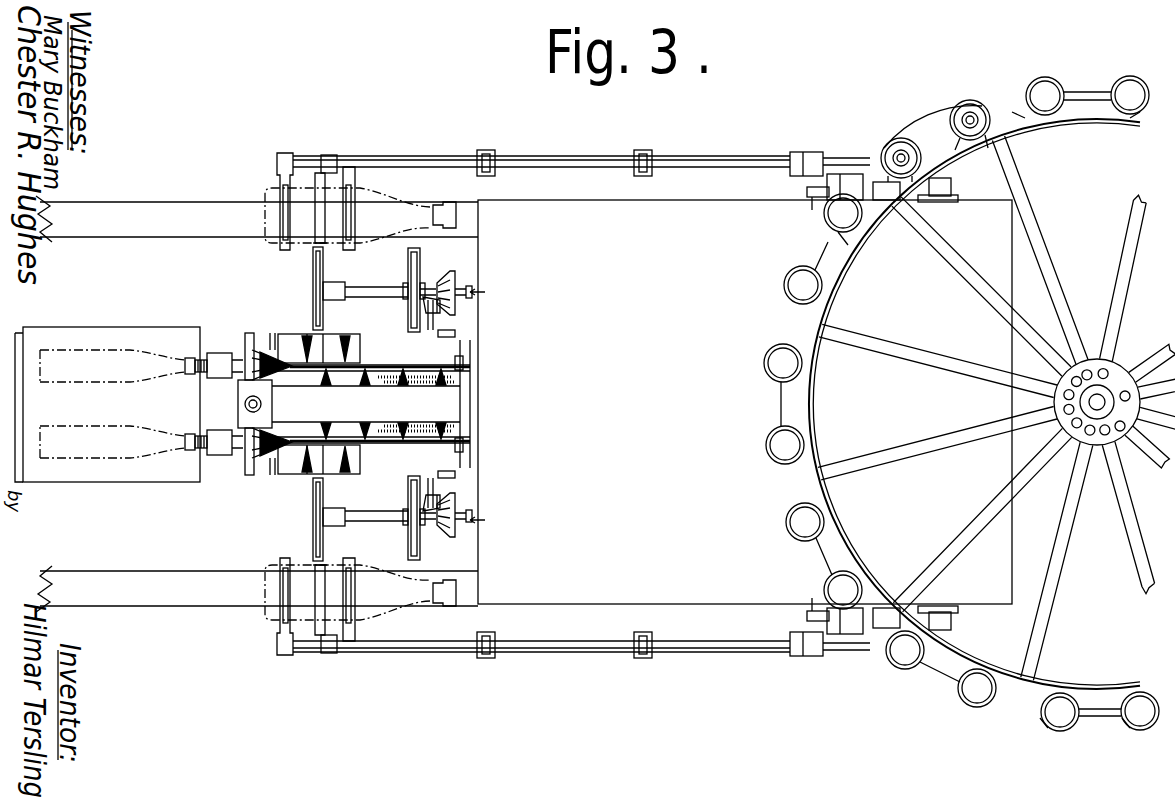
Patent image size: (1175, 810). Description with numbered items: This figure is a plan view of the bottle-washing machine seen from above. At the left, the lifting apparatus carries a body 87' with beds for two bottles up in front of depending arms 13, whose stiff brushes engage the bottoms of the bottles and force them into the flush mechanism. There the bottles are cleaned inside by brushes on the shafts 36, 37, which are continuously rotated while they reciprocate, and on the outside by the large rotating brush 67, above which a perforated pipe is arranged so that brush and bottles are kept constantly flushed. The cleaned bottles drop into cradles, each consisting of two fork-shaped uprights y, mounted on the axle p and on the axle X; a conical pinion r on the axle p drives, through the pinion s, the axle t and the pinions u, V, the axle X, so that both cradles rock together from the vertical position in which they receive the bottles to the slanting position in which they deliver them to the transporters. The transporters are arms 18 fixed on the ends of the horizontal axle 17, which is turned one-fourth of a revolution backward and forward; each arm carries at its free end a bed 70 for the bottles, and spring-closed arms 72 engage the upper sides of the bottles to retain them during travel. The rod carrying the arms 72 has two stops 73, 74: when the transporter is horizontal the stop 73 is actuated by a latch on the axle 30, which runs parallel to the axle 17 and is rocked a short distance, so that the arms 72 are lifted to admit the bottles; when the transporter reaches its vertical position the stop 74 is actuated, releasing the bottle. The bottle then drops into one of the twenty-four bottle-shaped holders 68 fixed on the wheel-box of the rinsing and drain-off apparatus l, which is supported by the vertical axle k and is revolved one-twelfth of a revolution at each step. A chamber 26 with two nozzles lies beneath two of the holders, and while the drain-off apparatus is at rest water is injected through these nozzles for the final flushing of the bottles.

The transporter arm 18 is at (533, 158).
The bed 70 is at (283, 219).
The retaining arm 72 is at (318, 228).
The depending arm 13 is at (220, 356).
The body of lifting apparatus 87' is at (117, 404).
The brush shaft 37 is at (470, 366).
The brush shaft 36 is at (470, 442).
The brush 67 is at (412, 388).
The cradle y is at (410, 262).
The conical pinion r is at (445, 280).
The pinion s is at (440, 304).
The axle t is at (420, 333).
The axle p is at (486, 293).
The pinion u is at (446, 512).
The pinion V is at (445, 528).
The axle X is at (471, 501).
The chamber 26 is at (933, 125).
The axle 30 is at (885, 185).
The horizontal axle 17 is at (845, 405).
The stop 73 is at (810, 199).
The stop 74 is at (908, 192).
The bottle-shaped holder 68 is at (766, 448).
The drain-off apparatus l is at (905, 350).
The vertical axle k is at (1108, 394).